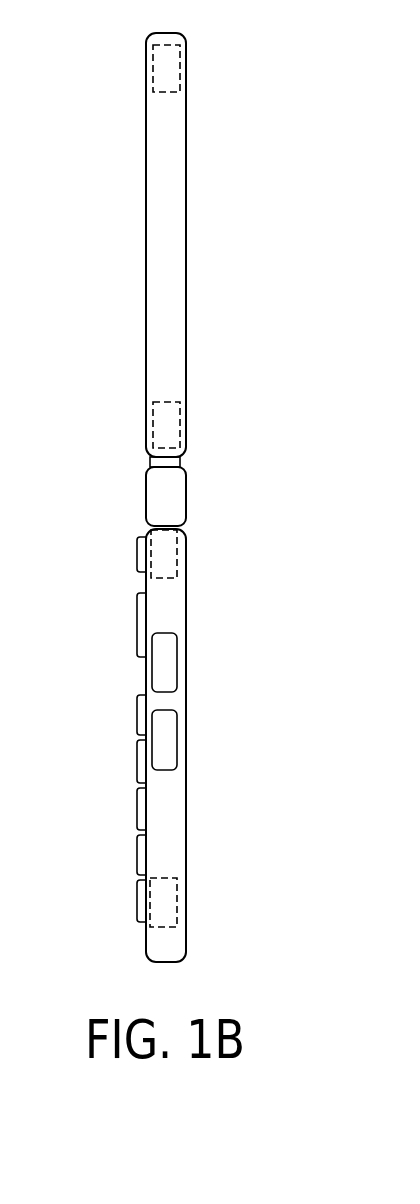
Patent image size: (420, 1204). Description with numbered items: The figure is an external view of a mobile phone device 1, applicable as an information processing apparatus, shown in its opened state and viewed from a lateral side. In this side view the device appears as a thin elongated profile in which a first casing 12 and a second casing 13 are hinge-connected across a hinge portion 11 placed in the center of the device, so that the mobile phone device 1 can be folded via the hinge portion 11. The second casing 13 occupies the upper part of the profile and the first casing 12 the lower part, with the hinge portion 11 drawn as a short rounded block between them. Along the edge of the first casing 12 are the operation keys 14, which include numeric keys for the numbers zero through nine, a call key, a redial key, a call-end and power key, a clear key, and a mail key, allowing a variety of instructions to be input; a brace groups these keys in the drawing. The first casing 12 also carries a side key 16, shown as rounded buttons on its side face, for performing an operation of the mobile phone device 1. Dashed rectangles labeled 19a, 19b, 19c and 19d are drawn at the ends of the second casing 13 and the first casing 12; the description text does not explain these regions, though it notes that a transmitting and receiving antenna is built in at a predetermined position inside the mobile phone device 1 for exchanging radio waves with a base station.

The mobile phone device 1 is at (213, 788).
The hinge portion 11 is at (186, 497).
The first casing 12 is at (186, 607).
The second casing 13 is at (186, 253).
The operation keys 14 is at (130, 553).
The side key 16 is at (177, 663).
The antenna element 19a is at (180, 65).
The antenna element 19b is at (177, 905).
The antenna element 19c is at (180, 420).
The antenna element 19d is at (177, 553).